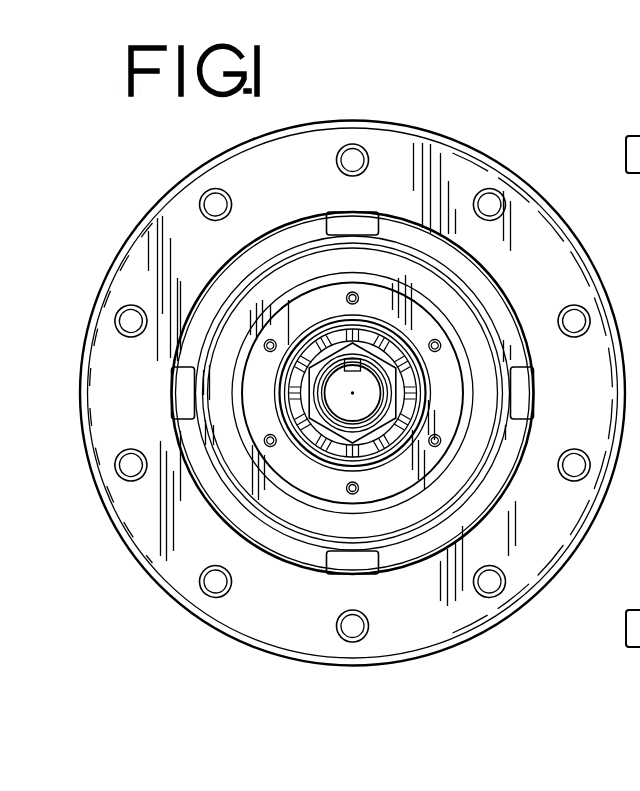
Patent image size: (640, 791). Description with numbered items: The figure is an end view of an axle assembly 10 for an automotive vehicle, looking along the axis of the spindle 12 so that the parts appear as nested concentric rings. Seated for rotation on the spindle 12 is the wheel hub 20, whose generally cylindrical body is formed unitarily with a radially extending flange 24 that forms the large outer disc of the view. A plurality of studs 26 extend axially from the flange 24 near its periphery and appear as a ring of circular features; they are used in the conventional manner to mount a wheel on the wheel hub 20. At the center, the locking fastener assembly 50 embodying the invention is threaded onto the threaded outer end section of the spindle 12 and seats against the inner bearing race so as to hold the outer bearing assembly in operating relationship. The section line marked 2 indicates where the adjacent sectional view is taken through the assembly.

The axle assembly 10 is at (352, 357).
The spindle 12 is at (307, 420).
The wheel hub 20 is at (353, 470).
The flange 24 is at (353, 350).
The studs 26 is at (353, 388).
The locking fastener assembly 50 is at (382, 375).
The section line 2- 2 is at (341, 392).